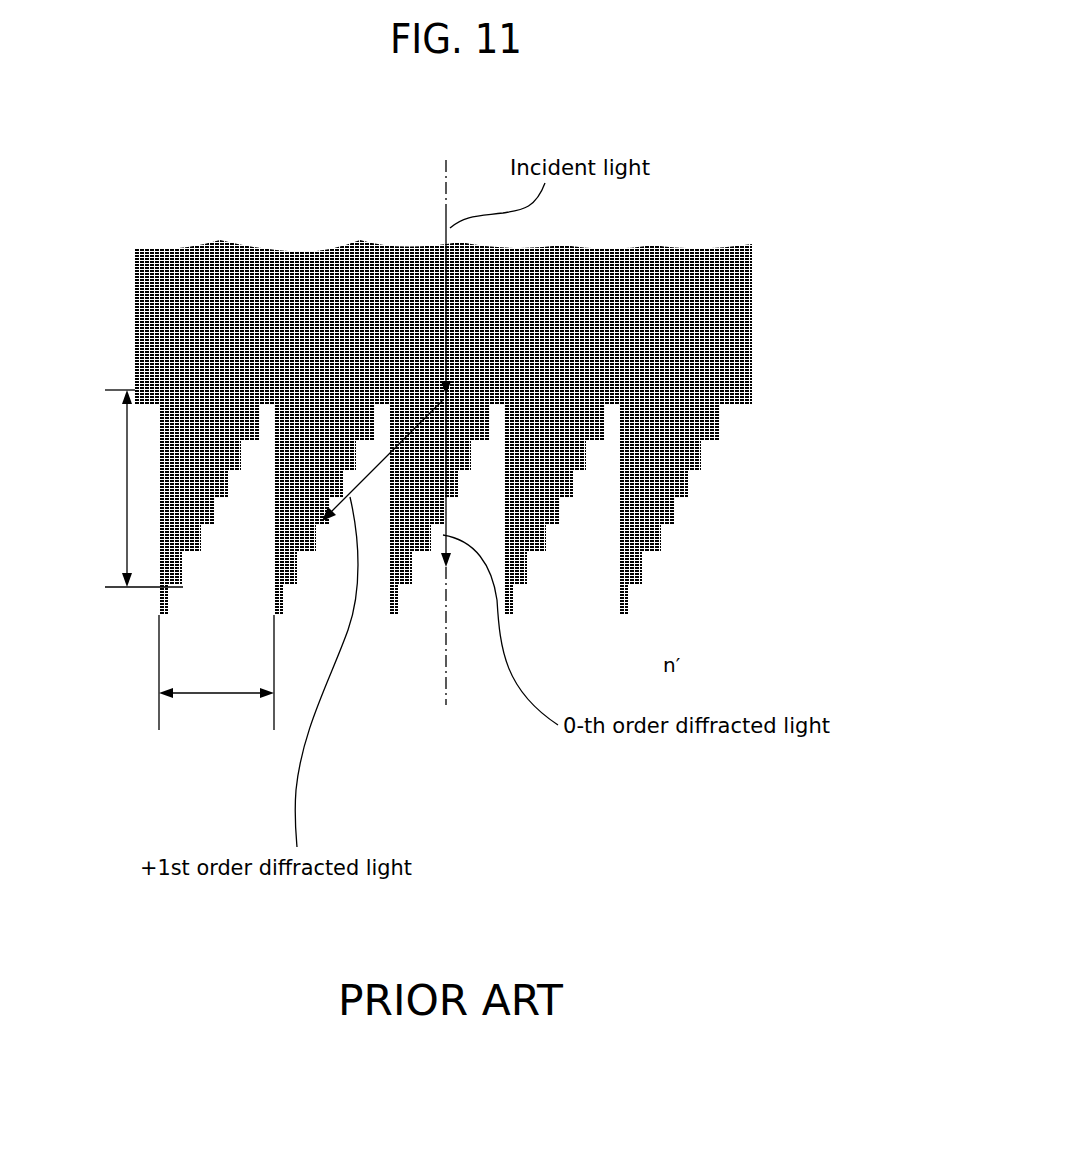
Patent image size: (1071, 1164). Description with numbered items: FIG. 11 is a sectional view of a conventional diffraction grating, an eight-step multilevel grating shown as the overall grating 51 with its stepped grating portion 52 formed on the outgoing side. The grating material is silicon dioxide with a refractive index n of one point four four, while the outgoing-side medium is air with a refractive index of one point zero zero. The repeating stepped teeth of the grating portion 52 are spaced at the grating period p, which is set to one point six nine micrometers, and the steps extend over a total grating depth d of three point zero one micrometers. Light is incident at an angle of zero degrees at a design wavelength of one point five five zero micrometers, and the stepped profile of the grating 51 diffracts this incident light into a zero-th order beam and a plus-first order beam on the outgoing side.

The diffraction grating 51 is at (503, 396).
The stepped sawtooth grating portion 52 is at (485, 511).
The refractive index of grating material n is at (628, 250).
The total grating depth d is at (112, 488).
The grating period p is at (216, 672).